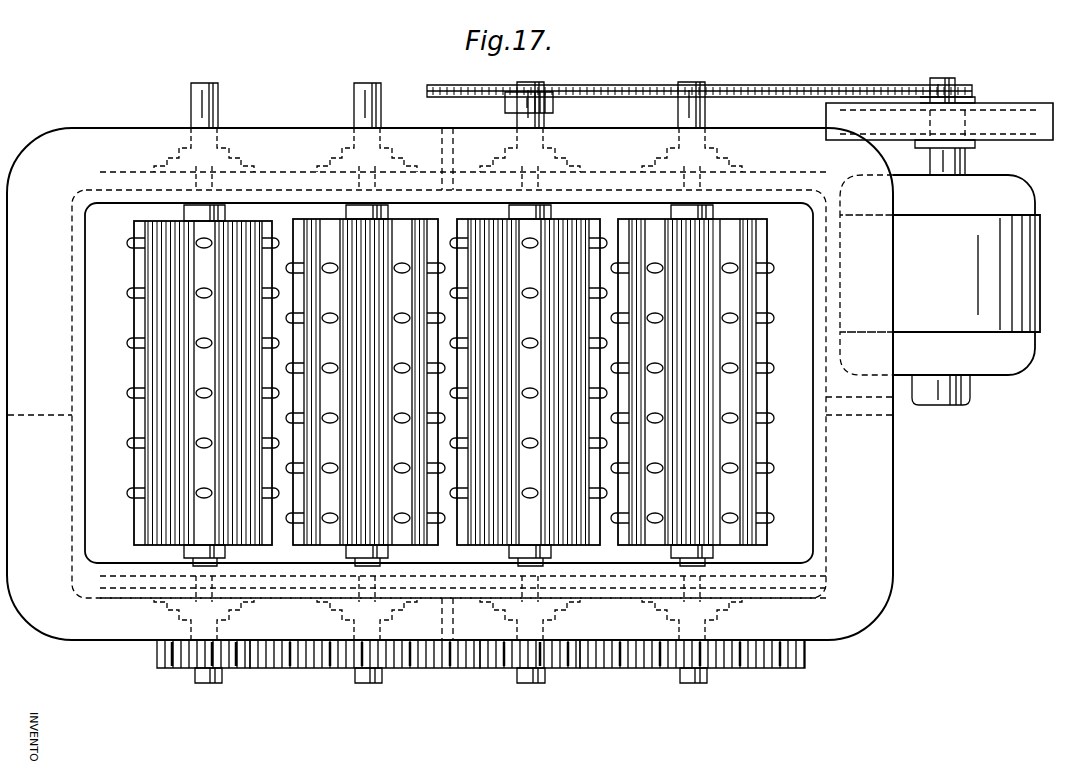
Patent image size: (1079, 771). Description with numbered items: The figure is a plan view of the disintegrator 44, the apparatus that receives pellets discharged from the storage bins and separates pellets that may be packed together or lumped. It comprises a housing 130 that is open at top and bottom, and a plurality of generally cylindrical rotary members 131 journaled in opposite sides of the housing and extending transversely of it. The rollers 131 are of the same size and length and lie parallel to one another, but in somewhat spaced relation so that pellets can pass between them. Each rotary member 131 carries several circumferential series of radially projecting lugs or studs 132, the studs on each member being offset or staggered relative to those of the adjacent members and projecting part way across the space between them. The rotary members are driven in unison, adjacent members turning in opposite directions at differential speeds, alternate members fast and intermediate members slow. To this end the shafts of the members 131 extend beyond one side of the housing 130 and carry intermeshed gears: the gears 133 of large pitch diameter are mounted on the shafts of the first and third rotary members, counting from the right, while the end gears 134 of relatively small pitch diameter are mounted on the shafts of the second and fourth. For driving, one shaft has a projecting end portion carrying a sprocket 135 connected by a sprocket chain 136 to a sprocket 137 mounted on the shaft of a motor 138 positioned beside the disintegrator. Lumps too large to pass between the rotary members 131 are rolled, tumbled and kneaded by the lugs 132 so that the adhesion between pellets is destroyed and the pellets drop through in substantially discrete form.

The disintegrator 44 is at (905, 519).
The housing 130 is at (299, 112).
The rotary members 131 is at (157, 511).
The lugs or studs 132 is at (196, 393).
The gears 133 is at (416, 667).
The end gears 134 is at (172, 669).
The sprocket 135 is at (505, 103).
The sprocket chain 136 is at (768, 86).
The sprocket 137 is at (986, 62).
The motor 138 is at (977, 378).